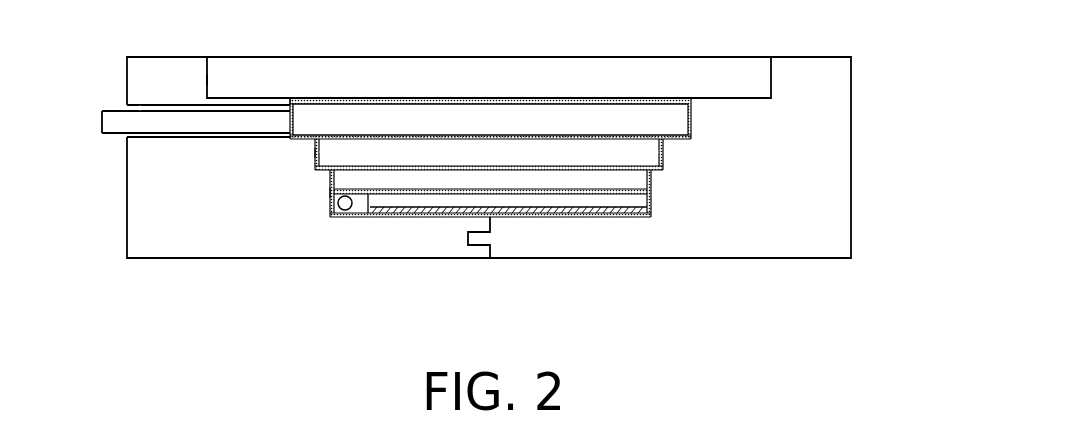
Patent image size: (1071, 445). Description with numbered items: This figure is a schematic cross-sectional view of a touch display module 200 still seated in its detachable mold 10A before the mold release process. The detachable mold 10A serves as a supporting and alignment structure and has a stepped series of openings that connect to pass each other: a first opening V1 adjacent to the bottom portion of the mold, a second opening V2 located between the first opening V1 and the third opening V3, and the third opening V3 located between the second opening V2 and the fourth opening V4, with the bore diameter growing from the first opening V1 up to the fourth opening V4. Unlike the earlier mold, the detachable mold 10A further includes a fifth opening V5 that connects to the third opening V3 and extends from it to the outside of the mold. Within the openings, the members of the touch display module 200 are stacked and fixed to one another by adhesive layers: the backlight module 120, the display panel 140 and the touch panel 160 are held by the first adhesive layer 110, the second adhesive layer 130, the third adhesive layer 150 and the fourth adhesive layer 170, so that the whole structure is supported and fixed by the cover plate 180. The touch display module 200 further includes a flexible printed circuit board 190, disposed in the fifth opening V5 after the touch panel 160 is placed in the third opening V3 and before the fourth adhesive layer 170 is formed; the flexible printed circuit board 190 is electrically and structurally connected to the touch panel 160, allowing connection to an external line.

The detachable mold 10A is at (832, 128).
The flexible printed circuit board 190 is at (112, 123).
The cover plate 180 is at (442, 80).
The fourth adhesive layer 170 is at (500, 107).
The touch panel 160 is at (557, 120).
The third adhesive layer 150 is at (603, 137).
The display panel 140 is at (637, 152).
The second adhesive layer 130 is at (662, 165).
The backlight module 120 is at (659, 175).
The first adhesive layer 110 is at (684, 97).
The touch display module 200 is at (928, 337).
The first opening V1 is at (337, 193).
The second opening V2 is at (320, 153).
The third opening V3 is at (292, 99).
The fourth opening V4 is at (211, 80).
The fifth opening V5 is at (145, 124).